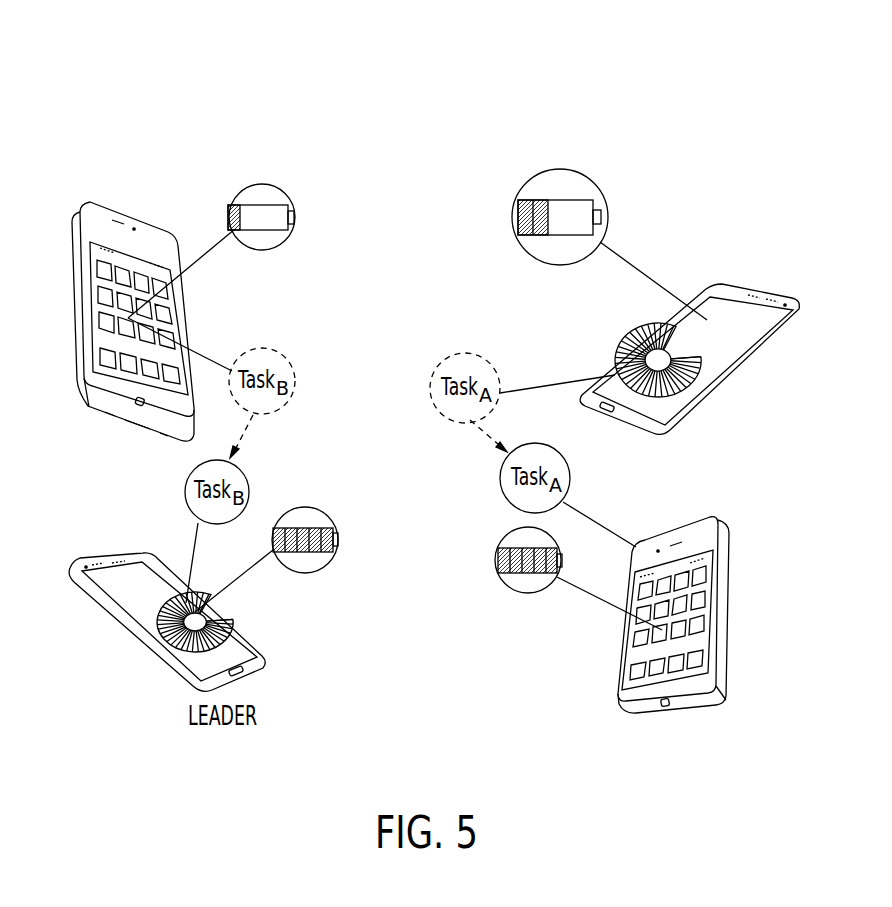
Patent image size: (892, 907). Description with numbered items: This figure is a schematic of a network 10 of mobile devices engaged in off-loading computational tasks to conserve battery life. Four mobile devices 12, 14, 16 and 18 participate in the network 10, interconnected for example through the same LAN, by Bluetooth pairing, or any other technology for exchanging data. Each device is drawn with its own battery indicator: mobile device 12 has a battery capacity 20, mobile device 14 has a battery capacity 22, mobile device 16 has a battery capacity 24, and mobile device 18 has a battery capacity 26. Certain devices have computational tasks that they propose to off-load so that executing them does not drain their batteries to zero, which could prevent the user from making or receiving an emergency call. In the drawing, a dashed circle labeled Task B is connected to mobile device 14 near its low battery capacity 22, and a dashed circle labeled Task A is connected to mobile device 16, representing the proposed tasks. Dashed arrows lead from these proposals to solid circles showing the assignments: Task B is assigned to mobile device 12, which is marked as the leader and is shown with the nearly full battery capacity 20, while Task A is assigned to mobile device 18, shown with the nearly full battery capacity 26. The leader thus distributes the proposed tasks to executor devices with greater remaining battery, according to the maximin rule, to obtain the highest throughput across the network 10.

The network 10 is at (434, 92).
The mobile device 12 is at (87, 559).
The mobile device 14 is at (123, 217).
The mobile device 16 is at (749, 286).
The mobile device 18 is at (727, 521).
The battery capacity 20 is at (317, 505).
The battery capacity 22 is at (267, 184).
The battery capacity 24 is at (558, 169).
The battery capacity 26 is at (498, 549).